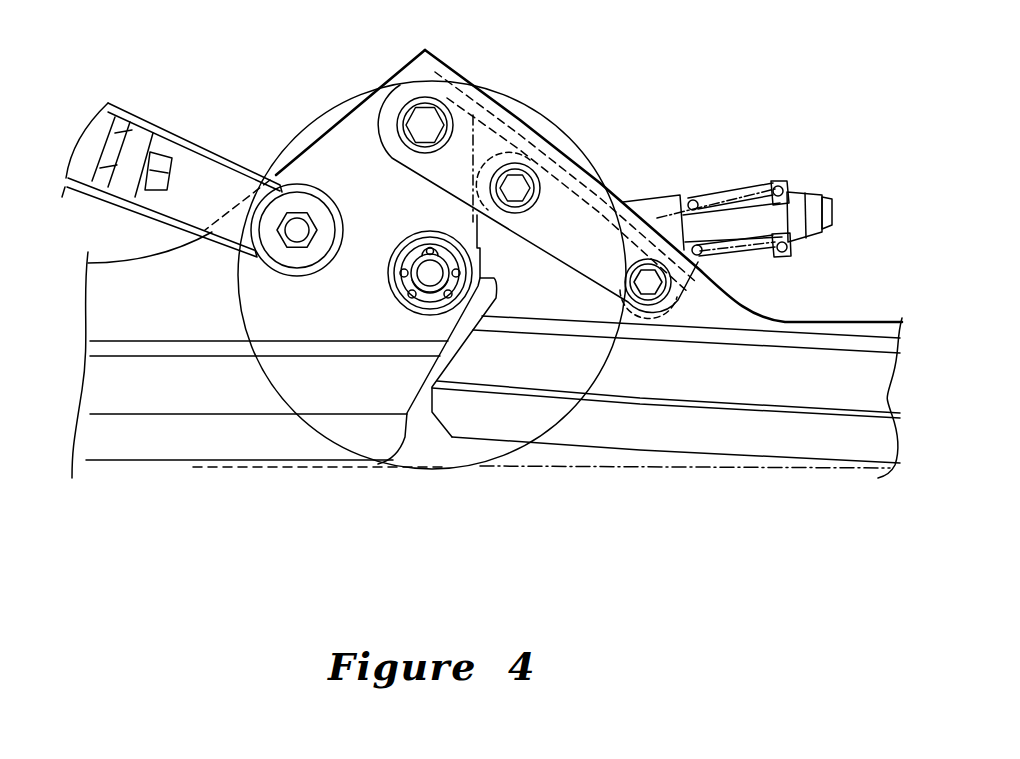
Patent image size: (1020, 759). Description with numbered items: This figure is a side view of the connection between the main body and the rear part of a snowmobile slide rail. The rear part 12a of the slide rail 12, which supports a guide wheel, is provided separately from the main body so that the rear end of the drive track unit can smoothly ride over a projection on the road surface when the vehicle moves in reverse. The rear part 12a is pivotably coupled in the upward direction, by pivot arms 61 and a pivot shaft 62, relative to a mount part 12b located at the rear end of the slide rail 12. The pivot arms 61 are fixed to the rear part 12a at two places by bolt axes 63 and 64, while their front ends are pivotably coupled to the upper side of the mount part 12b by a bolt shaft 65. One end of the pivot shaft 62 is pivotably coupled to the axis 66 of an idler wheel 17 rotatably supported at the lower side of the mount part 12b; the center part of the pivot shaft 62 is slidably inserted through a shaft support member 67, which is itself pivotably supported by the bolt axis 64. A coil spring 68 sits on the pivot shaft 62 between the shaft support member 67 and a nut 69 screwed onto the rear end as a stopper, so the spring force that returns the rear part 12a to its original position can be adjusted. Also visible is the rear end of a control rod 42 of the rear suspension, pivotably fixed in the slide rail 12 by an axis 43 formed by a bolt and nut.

The slide rail 12 is at (200, 393).
The rear part of the slide rail 12a is at (812, 385).
The mount part 12b is at (358, 150).
The idler wheel 17 is at (317, 433).
The control rod 42 is at (145, 117).
The axis 43 is at (298, 222).
The pivot arm 61 is at (505, 135).
The pivot shaft 62 is at (735, 227).
The bolt axis 63 is at (518, 190).
The bolt axis 64 is at (648, 284).
The bolt shaft 65 is at (428, 120).
The axis of the idler wheel 66 is at (393, 289).
The shaft support member 67 is at (663, 197).
The coil spring 68 is at (757, 183).
The nut 69 is at (803, 188).